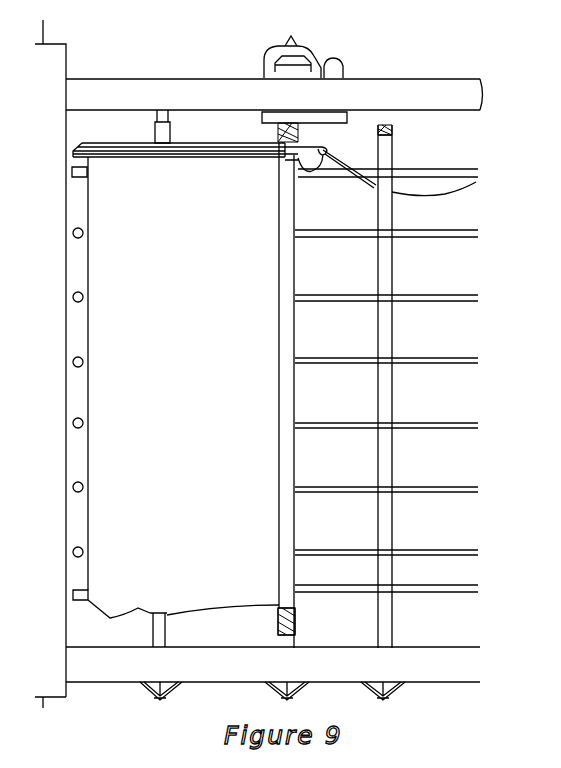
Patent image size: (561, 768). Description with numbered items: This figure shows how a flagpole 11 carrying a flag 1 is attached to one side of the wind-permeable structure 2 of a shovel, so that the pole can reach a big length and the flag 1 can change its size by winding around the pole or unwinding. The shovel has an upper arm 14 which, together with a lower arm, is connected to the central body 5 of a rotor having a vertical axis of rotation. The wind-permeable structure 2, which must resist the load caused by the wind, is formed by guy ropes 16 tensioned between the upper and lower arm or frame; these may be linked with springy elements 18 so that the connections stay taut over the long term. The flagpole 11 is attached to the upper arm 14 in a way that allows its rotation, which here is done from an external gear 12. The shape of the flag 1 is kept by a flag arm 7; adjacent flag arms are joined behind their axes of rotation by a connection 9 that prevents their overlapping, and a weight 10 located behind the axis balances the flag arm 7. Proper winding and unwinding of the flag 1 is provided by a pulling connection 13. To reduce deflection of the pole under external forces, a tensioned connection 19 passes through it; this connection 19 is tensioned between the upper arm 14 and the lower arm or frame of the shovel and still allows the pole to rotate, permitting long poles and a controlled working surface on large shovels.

The flag 1 is at (180, 412).
The wind-permeable structure 2 is at (432, 232).
The central body 5 is at (50, 70).
The flag arm 7 is at (205, 152).
The connection 9 is at (455, 197).
The weight 10 is at (280, 637).
The flagpole 11 is at (297, 618).
The external gear 12 is at (343, 65).
The pulling connection 13 is at (240, 140).
The upper arm 14 is at (420, 95).
The guy rope 16 is at (392, 119).
The springy element 18 is at (408, 690).
The tensioned connection 19 is at (303, 48).